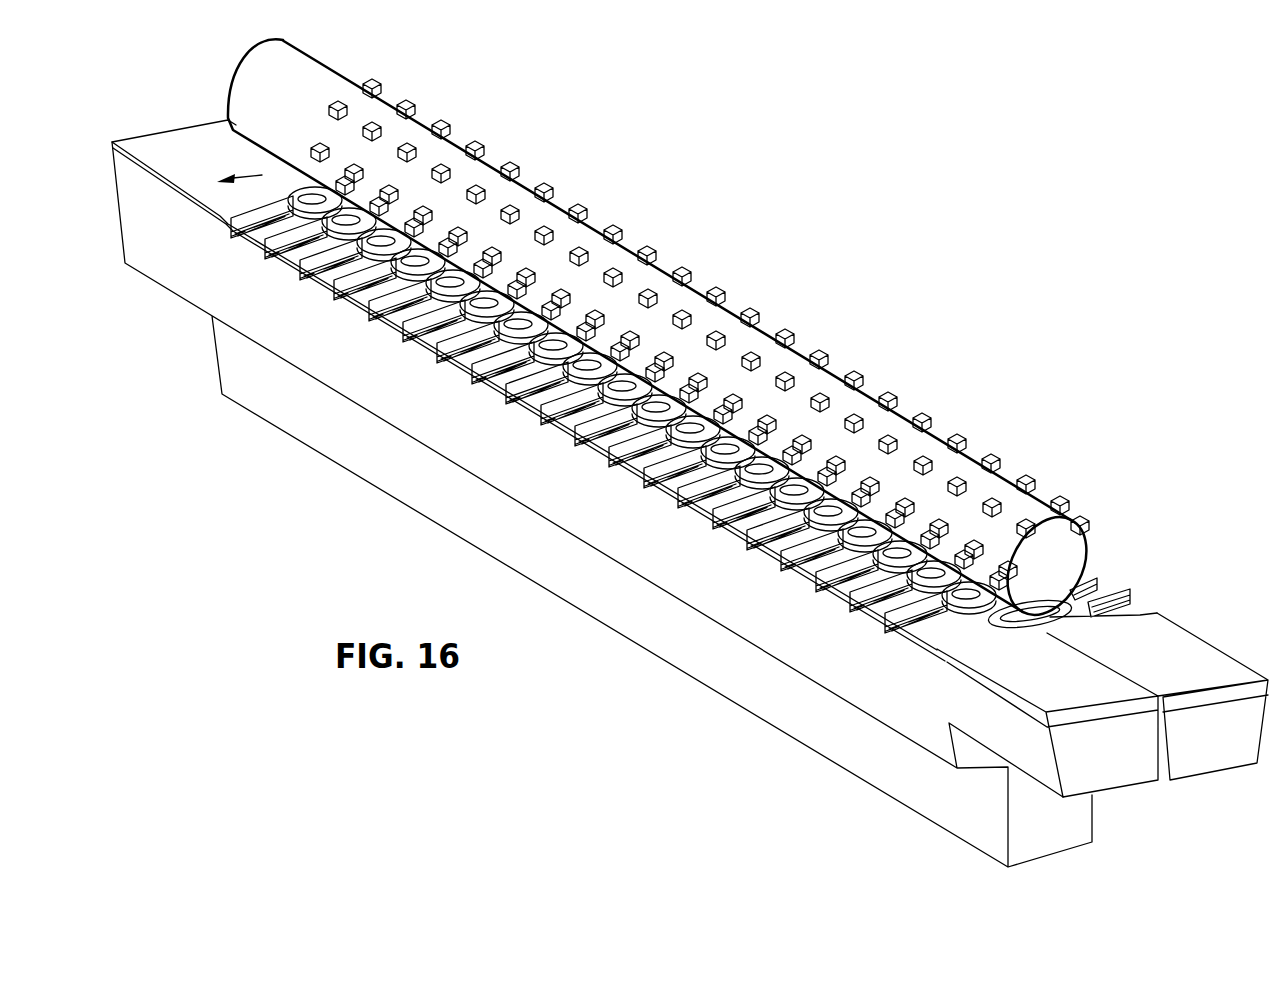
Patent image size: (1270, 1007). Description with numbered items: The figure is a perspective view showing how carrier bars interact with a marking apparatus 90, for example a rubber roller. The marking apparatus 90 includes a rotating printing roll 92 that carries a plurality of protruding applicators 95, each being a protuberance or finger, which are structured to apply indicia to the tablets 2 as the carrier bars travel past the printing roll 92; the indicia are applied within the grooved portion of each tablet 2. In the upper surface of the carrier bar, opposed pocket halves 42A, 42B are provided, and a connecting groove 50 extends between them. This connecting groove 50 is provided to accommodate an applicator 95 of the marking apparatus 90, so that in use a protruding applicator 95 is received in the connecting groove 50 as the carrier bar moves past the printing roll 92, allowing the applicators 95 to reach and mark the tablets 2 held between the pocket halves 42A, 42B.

The tablet 2 is at (1052, 618).
The pocket half 42A is at (1040, 630).
The pocket half 42B is at (918, 648).
The connecting groove 50 is at (997, 630).
The marking apparatus 90 is at (697, 333).
The printing roll 92 is at (1058, 569).
The applicator 95 is at (1022, 522).